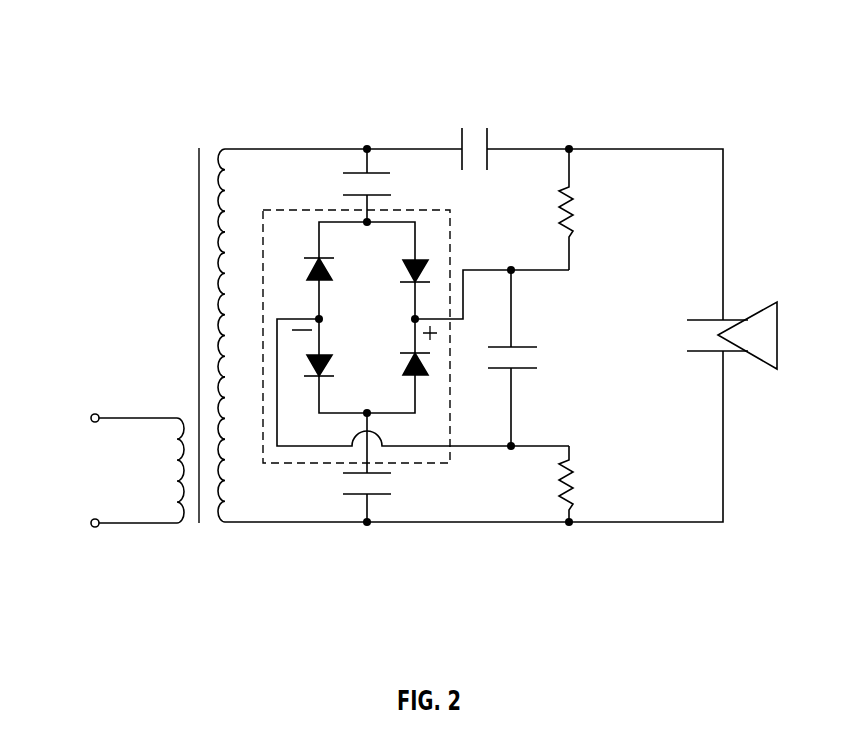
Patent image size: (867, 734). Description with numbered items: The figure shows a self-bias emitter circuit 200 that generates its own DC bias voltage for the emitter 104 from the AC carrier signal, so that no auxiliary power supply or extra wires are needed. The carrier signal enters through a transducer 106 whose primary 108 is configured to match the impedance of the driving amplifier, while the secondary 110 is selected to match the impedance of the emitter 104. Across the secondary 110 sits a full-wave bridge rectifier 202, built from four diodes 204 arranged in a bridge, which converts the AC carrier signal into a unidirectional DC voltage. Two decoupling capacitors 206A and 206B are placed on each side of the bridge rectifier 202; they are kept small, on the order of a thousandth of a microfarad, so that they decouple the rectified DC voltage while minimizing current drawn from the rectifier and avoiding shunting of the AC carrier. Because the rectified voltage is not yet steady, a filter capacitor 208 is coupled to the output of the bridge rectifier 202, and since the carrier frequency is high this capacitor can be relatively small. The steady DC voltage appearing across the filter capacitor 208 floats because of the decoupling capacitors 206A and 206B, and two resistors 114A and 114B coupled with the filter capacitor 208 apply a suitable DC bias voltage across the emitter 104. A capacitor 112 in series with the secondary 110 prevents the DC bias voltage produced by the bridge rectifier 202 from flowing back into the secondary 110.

The self-bias emitter circuit 200 is at (122, 155).
The emitter 104 is at (765, 318).
The transducer 106 is at (201, 538).
The primary 108 is at (176, 410).
The secondary 110 is at (225, 150).
The capacitor 112 is at (493, 133).
The resistor 114A is at (572, 224).
The resistor 114B is at (572, 484).
The full-wave bridge rectifier 202 is at (288, 210).
The diode 204 is at (305, 263).
The decoupling capacitor 206A is at (390, 173).
The decoupling capacitor 206B is at (382, 495).
The filter capacitor 208 is at (532, 347).